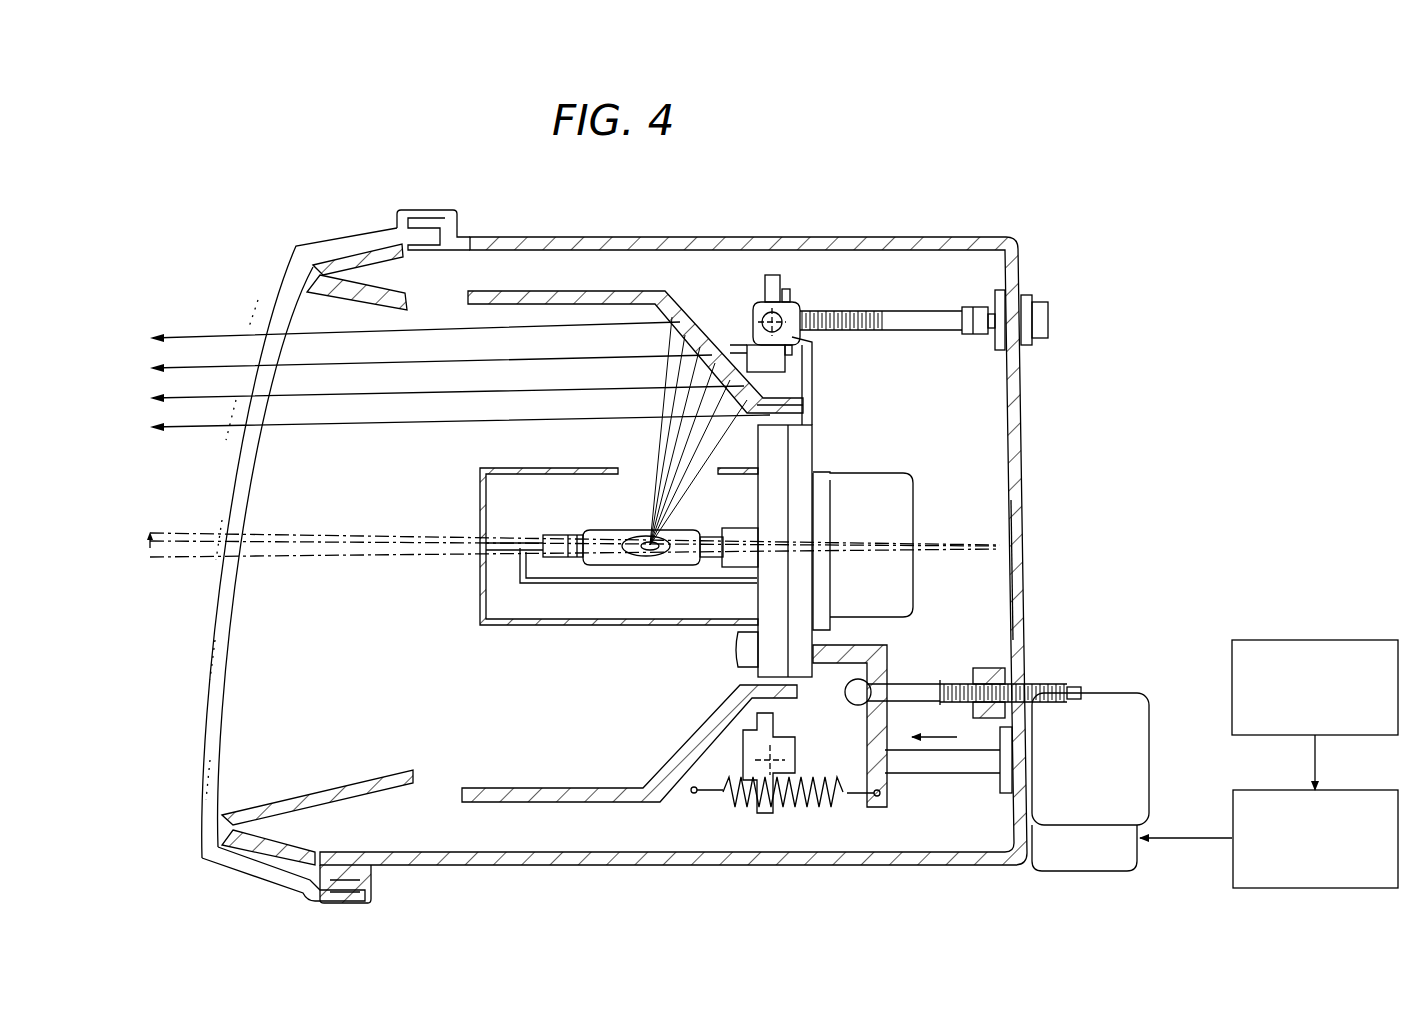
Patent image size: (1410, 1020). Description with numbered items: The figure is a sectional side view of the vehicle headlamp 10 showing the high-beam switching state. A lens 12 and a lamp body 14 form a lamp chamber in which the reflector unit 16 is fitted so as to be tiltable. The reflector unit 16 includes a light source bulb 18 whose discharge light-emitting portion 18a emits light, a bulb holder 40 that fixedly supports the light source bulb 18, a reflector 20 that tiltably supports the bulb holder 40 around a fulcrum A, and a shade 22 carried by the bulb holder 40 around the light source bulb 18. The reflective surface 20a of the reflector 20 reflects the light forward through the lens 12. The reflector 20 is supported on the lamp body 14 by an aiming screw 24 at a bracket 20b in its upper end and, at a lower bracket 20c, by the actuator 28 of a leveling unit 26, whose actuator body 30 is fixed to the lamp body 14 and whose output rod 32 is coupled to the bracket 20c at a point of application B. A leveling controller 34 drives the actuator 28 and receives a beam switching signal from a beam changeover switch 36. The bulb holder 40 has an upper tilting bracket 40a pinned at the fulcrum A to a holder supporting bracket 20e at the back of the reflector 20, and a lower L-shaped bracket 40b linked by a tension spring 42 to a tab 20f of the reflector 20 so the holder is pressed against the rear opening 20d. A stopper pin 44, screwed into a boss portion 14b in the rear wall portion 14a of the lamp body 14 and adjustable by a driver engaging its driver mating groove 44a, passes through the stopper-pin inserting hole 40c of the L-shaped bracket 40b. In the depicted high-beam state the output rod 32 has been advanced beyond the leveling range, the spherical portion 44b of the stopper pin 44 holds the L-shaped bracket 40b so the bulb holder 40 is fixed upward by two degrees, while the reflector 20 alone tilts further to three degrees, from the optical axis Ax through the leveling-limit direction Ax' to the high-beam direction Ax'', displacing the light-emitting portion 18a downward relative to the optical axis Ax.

The vehicle headlamp 10 is at (277, 225).
The lens 12 is at (279, 302).
The lamp body 14 is at (878, 232).
The rear wall portion 14a is at (1020, 462).
The boss portion 14b is at (990, 665).
The reflector unit 16 is at (458, 605).
The light source bulb 18 is at (584, 528).
The discharge light-emitting portion 18a is at (640, 535).
The reflector 20 is at (590, 290).
The reflective surface 20a is at (685, 350).
The bracket 20b is at (773, 275).
The bracket 20c is at (768, 815).
The rear opening 20d is at (785, 420).
The holder supporting bracket 20e is at (716, 305).
The tab 20f is at (692, 805).
The shade 22 is at (475, 500).
The aiming screw 24 is at (918, 320).
The leveling unit 26 is at (1225, 568).
The actuator 28 is at (1120, 692).
The actuator body 30 is at (1150, 708).
The output rod 32 is at (930, 775).
The leveling controller 34 is at (1365, 790).
The beam changeover switch 36 is at (1348, 640).
The bulb holder 40 is at (820, 458).
The tilting bracket 40a is at (815, 405).
The L-shaped bracket 40b is at (872, 655).
The stopper-pin inserting hole 40c is at (905, 695).
The tension spring 42 is at (780, 805).
The stopper pin 44 is at (956, 684).
The driver mating groove 44a is at (1076, 685).
The spherical portion 44b is at (860, 685).
The fulcrum A is at (782, 328).
The point of application B is at (788, 758).
The optical axis Ax is at (575, 597).
The optical axis at upper leveling limit Ax' is at (573, 514).
The optical axis at high-beam position Ax'' is at (575, 495).